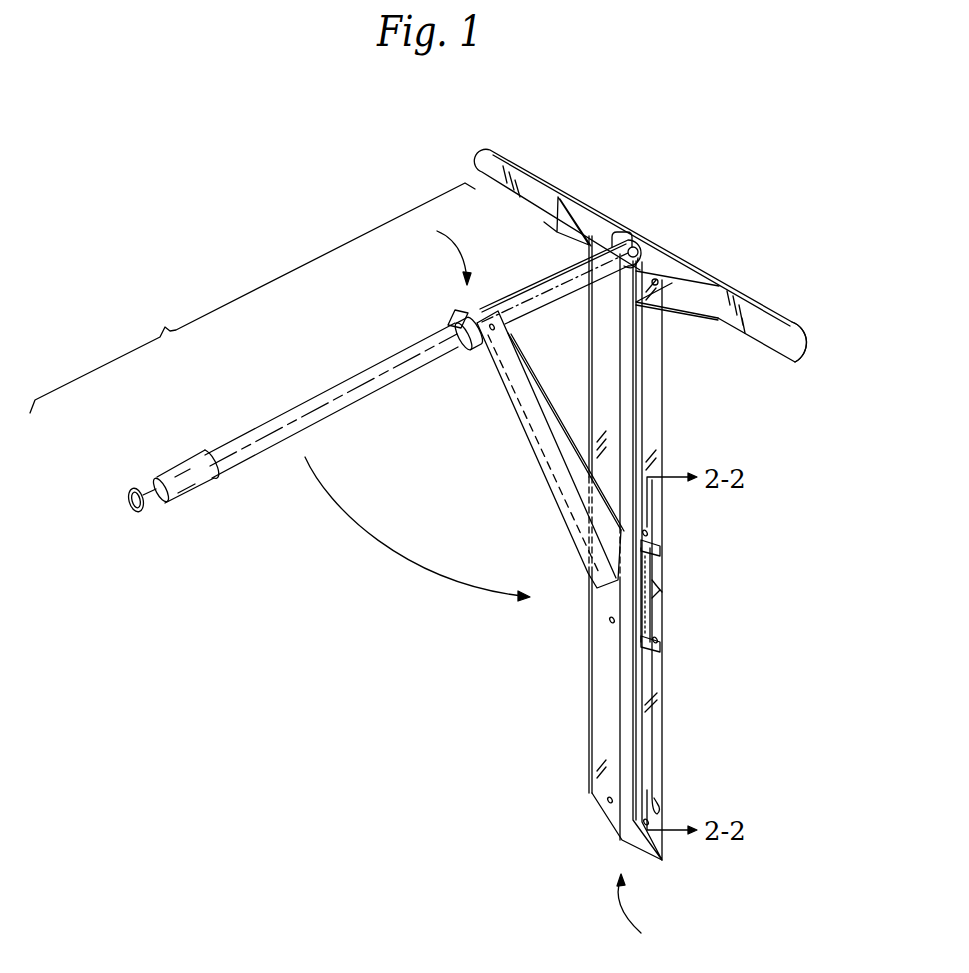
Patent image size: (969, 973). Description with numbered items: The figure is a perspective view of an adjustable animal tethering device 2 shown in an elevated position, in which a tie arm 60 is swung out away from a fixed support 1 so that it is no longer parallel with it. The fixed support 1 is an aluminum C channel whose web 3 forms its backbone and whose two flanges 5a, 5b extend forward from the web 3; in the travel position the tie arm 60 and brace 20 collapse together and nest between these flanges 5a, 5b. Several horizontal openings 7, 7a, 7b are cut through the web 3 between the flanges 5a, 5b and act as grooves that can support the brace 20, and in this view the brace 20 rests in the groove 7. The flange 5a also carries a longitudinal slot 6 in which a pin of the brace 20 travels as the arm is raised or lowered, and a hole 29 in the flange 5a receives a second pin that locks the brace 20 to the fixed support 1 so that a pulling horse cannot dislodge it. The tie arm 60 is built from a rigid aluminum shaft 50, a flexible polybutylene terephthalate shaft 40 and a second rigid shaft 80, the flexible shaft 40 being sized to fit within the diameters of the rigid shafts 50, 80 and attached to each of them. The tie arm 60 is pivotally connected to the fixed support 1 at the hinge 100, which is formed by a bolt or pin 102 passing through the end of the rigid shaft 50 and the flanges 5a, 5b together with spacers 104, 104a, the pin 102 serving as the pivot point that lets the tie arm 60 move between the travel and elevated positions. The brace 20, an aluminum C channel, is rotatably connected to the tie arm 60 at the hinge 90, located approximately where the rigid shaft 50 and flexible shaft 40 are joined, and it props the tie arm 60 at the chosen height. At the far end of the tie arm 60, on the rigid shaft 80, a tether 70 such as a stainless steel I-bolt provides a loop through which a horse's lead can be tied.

The fixed support 1 is at (635, 913).
The adjustable tethering device 2 is at (448, 248).
The web 3 is at (768, 332).
The flange 5a is at (663, 441).
The flange 5b is at (596, 794).
The longitudinal slot 6 is at (653, 736).
The opening (horizontal groove) 7 is at (662, 616).
The opening (horizontal groove) 7a is at (659, 650).
The opening (horizontal groove) 7b is at (660, 548).
The brace 20 is at (522, 452).
The hole 29 is at (662, 588).
The flexible shaft 40 is at (343, 371).
The rigid shaft 50 is at (540, 292).
The tie arm 60 is at (252, 298).
The tether 70 is at (140, 511).
The rigid shaft 80 is at (203, 484).
The hinge 90 is at (466, 350).
The hinge (tie arm attachment structure) 100 is at (667, 250).
The pin (bolt) 102 is at (650, 278).
The spacer 104 is at (637, 247).
The spacer 104a is at (614, 240).